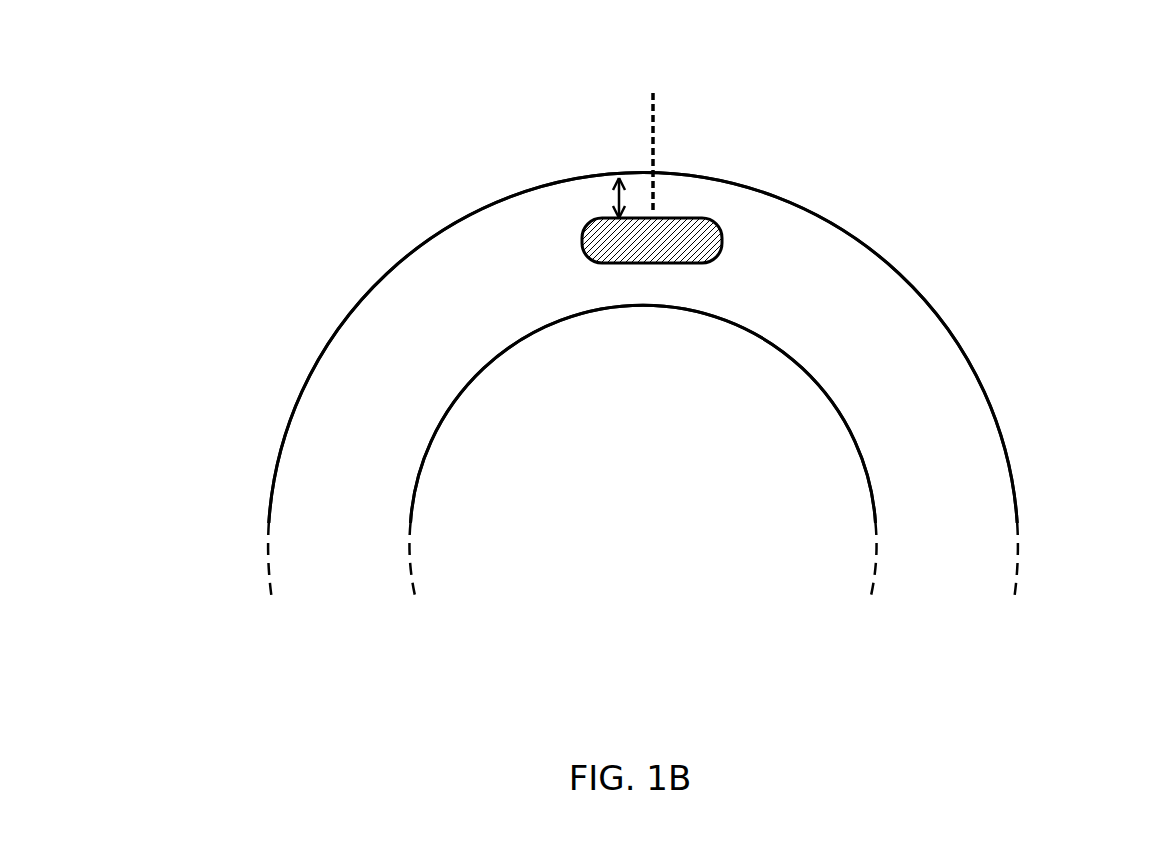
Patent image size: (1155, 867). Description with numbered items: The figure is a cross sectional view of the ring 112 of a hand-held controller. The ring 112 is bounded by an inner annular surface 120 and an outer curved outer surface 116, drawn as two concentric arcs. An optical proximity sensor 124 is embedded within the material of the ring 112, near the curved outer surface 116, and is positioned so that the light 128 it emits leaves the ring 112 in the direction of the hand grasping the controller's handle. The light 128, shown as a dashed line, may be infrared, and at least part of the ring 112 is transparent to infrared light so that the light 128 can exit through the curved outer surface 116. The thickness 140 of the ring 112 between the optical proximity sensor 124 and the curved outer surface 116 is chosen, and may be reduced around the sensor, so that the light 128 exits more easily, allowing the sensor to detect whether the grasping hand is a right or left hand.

The ring 112 is at (320, 496).
The curved outer surface 116 is at (932, 300).
The annular surface 120 is at (955, 465).
The optical proximity sensor 124 is at (722, 240).
The light 128 is at (651, 120).
The thickness 140 is at (605, 198).